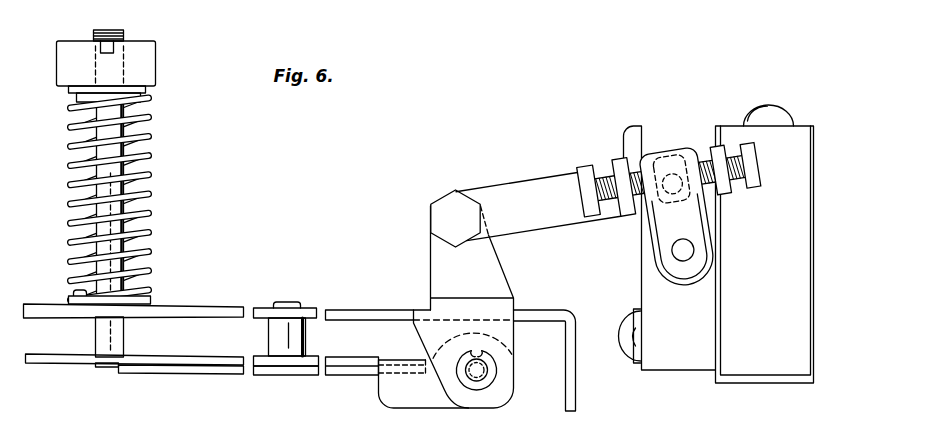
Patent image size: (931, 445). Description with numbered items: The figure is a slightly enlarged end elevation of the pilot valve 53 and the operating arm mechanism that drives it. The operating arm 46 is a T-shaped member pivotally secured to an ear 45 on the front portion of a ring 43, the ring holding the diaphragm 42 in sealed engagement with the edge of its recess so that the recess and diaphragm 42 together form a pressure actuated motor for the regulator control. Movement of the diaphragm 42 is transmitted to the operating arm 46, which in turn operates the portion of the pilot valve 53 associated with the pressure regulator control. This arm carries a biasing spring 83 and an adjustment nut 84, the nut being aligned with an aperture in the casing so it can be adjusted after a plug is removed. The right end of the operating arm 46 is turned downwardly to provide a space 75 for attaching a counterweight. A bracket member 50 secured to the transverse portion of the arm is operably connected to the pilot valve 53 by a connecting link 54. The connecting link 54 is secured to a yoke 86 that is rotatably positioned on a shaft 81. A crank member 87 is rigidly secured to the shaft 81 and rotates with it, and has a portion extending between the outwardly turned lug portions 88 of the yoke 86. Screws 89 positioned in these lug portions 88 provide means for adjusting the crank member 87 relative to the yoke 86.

The adjustment nut 84 is at (140, 64).
The biasing spring 83 is at (146, 192).
The operating arm 46 is at (200, 303).
The ring 43 is at (68, 358).
The diaphragm 42 is at (214, 371).
The bracket member 50 is at (441, 259).
The ear 45 is at (432, 396).
The space for attaching a counterweight 75 is at (565, 388).
The connecting link 54 is at (514, 198).
The screw 89 is at (583, 165).
The outwardly turned lug portion 88 is at (619, 158).
The crank member 87 is at (674, 150).
The yoke 86 is at (650, 244).
The shaft 81 is at (680, 256).
The pilot valve 53 is at (677, 379).